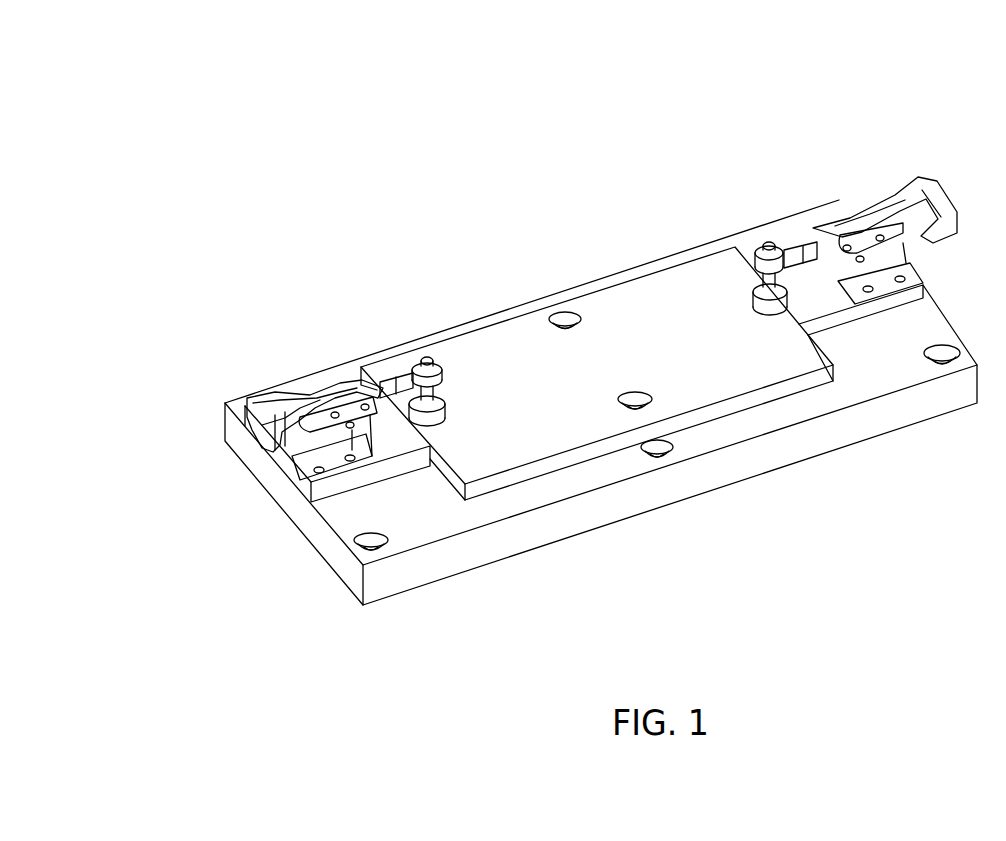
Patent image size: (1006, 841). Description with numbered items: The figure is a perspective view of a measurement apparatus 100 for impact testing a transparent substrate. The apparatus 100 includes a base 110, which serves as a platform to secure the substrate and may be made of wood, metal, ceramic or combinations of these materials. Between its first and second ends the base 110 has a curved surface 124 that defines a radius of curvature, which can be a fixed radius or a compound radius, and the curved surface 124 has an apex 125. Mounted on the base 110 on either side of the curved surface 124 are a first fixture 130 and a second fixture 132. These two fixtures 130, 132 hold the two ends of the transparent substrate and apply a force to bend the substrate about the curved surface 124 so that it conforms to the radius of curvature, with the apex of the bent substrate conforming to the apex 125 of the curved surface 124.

The measurement apparatus 100 is at (406, 196).
The base 110 is at (268, 556).
The curved surface 124 is at (710, 353).
The apex 125 is at (592, 340).
The first fixture 130 is at (362, 380).
The second fixture 132 is at (880, 223).